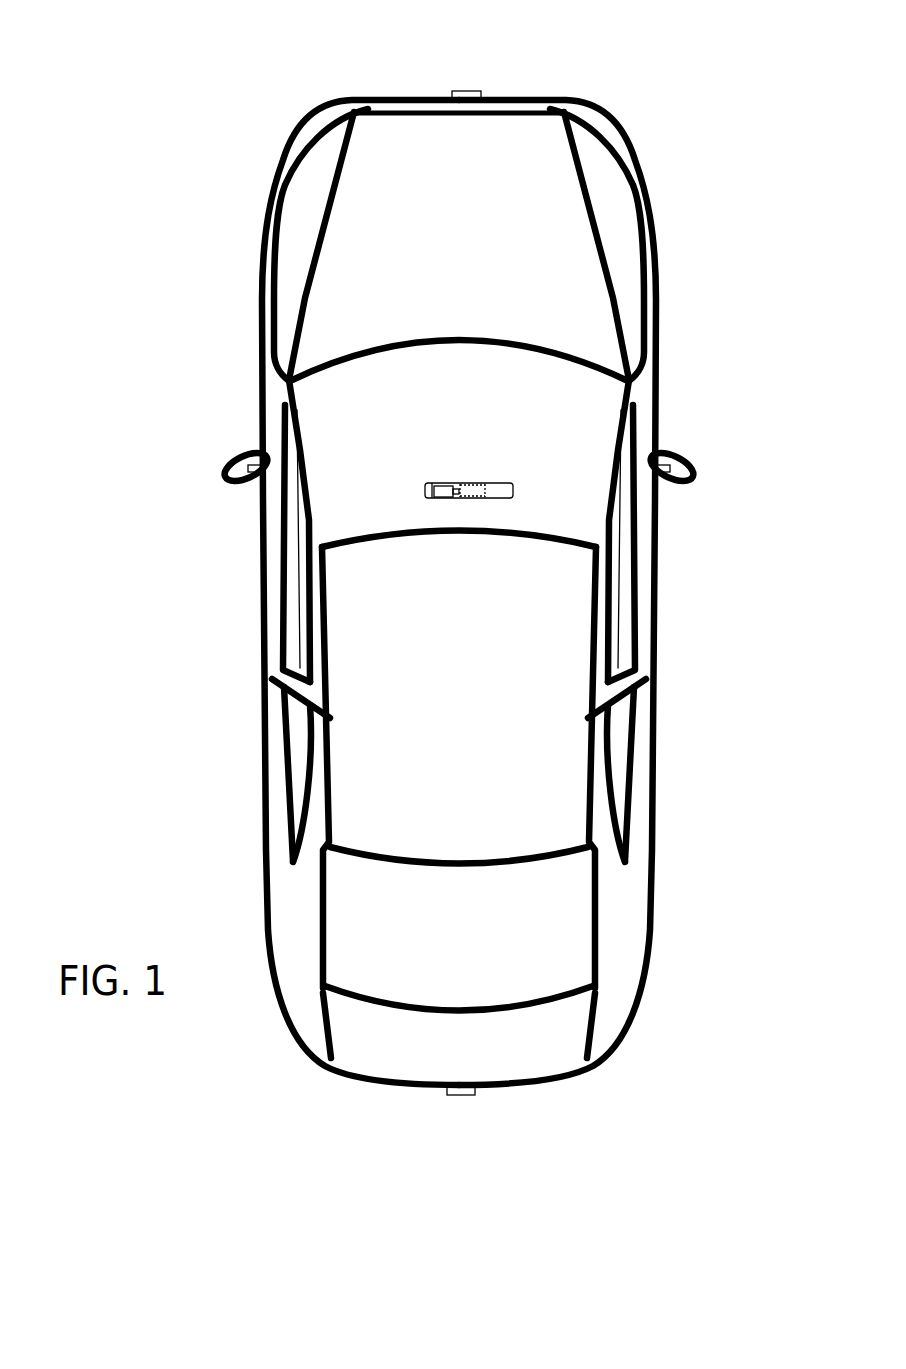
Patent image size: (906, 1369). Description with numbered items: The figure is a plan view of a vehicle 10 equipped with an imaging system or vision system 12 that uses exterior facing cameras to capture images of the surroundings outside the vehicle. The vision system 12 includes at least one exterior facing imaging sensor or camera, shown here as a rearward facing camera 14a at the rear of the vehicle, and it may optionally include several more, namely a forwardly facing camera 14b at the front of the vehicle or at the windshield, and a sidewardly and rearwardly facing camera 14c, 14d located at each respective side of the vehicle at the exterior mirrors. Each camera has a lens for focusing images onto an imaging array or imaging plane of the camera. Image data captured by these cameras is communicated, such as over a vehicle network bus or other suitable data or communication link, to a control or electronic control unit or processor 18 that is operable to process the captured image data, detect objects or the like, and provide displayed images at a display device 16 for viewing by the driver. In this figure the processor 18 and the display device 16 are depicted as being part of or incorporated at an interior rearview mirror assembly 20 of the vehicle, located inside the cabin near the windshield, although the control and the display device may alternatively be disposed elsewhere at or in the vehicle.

The vehicle 10 is at (196, 191).
The vision system 12 is at (412, 1115).
The rearward facing camera 14a is at (467, 1092).
The forwardly facing camera 14b is at (469, 90).
The sidewardly/rearwardly facing camera 14c is at (252, 470).
The sidewardly/rearwardly facing camera 14d is at (673, 468).
The display device 16 is at (445, 488).
The processor 18 is at (467, 485).
The interior rearview mirror assembly 20 is at (513, 483).